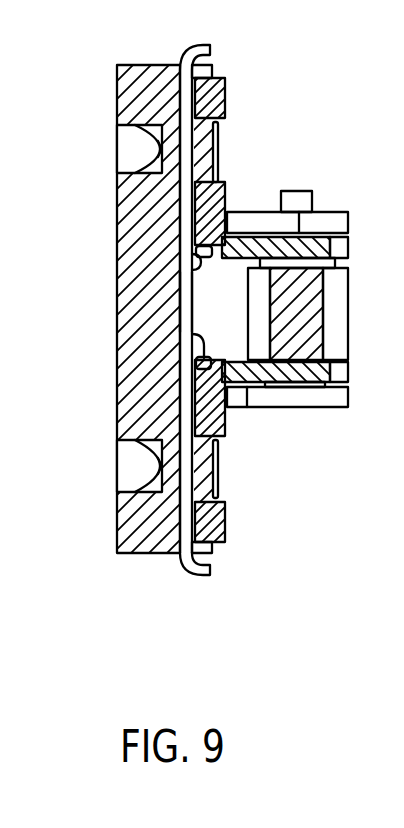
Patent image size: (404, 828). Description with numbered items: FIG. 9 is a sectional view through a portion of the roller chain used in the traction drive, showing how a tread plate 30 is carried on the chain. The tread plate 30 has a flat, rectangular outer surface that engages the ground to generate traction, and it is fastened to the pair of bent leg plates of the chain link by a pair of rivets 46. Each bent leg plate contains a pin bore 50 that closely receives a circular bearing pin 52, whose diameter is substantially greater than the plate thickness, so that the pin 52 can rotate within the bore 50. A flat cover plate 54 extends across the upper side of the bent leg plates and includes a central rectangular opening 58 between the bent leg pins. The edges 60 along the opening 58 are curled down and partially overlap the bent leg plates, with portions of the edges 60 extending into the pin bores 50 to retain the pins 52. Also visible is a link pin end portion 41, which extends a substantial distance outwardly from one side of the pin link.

The tread plate 30 is at (117, 98).
The link pin end portion 41 is at (312, 194).
The rivet 46 is at (117, 150).
The pin bore 50 is at (214, 260).
The bearing pin 52 is at (226, 92).
The cover plate 54 is at (183, 62).
The central rectangular opening 58 is at (190, 302).
The curled edge 60 is at (190, 258).